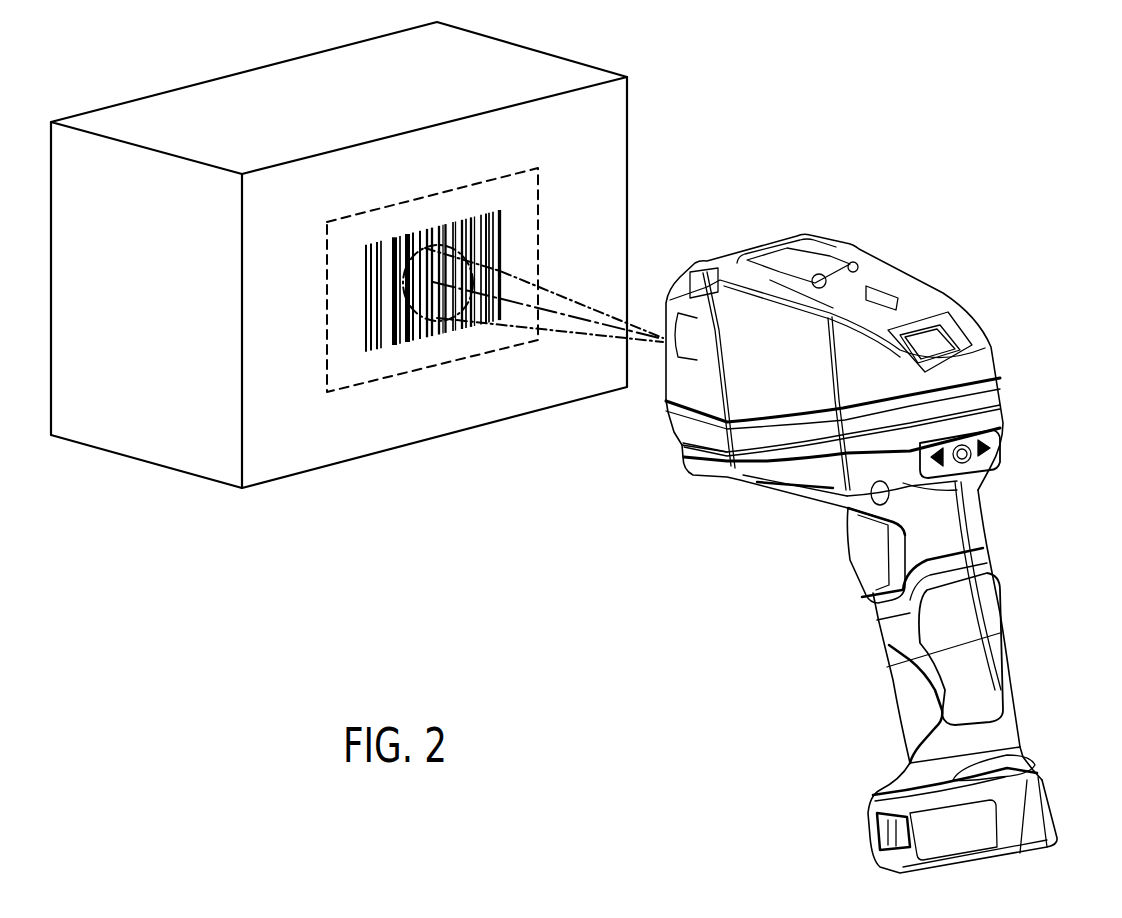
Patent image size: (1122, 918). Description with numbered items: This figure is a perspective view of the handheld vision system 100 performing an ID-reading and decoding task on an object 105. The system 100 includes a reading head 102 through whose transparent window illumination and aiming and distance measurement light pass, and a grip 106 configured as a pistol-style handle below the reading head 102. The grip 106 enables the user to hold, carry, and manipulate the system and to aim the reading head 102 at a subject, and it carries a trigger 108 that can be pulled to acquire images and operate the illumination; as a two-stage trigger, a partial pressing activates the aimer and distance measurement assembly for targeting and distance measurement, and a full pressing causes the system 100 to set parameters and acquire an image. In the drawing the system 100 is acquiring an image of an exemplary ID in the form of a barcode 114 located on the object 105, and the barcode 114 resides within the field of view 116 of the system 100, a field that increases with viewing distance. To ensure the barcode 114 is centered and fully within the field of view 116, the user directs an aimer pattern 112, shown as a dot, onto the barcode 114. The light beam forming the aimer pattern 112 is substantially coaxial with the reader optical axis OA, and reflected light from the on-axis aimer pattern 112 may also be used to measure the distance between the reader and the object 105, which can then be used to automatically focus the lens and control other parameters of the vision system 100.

The vision system 100 is at (1000, 208).
The reading head 102 is at (943, 293).
The object 105 is at (526, 49).
The grip 106 is at (1000, 605).
The trigger 108 is at (870, 548).
The aimer pattern 112 is at (440, 247).
The barcode 114 is at (394, 250).
The field of view 116 is at (324, 303).
The optical axis OA is at (577, 321).